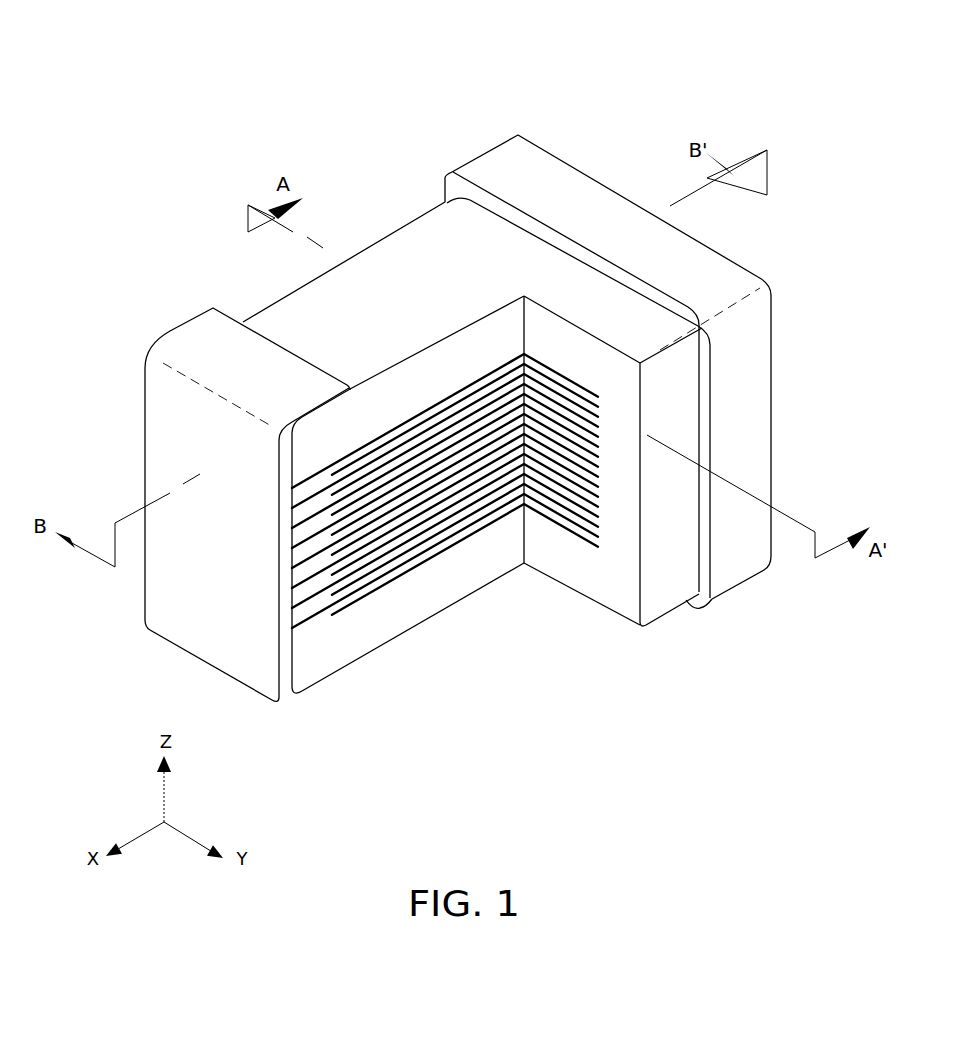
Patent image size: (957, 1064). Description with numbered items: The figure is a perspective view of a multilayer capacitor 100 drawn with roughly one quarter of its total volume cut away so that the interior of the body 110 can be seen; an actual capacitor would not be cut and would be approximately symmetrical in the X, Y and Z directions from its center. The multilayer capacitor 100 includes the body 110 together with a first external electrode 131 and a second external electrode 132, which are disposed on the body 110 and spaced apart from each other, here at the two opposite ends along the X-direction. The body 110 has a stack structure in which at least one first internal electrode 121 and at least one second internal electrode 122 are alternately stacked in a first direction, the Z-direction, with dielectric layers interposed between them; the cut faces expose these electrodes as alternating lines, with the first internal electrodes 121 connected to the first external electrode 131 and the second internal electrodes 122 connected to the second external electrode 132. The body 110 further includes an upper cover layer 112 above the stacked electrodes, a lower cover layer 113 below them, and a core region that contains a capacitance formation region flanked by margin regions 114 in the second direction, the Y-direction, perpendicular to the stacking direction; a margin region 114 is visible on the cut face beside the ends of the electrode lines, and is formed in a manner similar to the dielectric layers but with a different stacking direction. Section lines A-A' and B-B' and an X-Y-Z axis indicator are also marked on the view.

The multilayer capacitor 100 is at (326, 45).
The body 110 is at (494, 228).
The upper cover layer 112 is at (425, 383).
The lower cover layer 113 is at (420, 602).
The margin region 114 is at (625, 554).
The first internal electrode 121 is at (307, 480).
The second internal electrode 122 is at (345, 601).
The first external electrode 131 is at (203, 352).
The second external electrode 132 is at (556, 175).